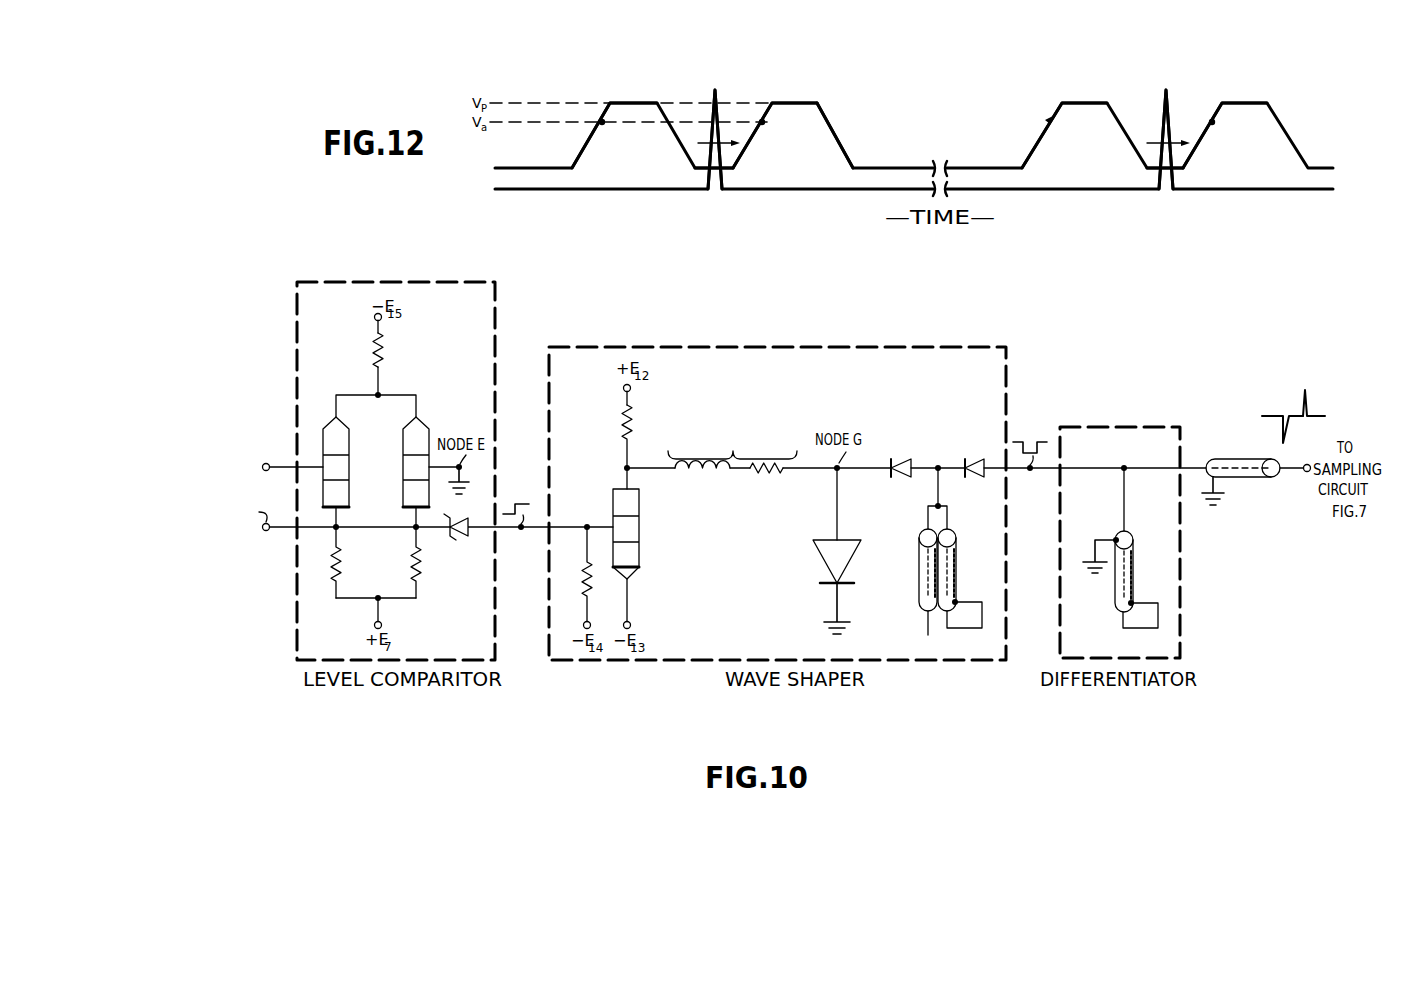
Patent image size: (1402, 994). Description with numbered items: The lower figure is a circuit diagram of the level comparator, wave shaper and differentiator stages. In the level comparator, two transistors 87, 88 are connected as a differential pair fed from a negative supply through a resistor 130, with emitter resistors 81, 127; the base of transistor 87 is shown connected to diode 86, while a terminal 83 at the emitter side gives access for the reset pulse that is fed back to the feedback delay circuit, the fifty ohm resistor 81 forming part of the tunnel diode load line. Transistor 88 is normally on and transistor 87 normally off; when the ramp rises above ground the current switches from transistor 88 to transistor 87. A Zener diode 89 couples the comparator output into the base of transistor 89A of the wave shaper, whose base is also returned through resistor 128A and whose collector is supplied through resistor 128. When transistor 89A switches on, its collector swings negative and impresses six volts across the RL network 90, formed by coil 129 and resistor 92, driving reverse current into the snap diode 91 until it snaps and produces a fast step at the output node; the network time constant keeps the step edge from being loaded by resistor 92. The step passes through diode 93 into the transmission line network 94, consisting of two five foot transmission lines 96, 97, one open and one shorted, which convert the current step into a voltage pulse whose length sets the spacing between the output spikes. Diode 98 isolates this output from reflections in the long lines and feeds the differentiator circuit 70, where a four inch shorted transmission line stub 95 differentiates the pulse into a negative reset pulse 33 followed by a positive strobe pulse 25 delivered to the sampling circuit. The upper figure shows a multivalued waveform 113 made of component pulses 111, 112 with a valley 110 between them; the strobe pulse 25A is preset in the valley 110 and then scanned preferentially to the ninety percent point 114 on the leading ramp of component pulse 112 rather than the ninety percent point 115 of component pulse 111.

In FIG. 12, the component pulse 111 is at (613, 103).
In FIG. 12, the component pulse 112 is at (775, 103).
In FIG. 12, the multivalued waveform 113 is at (843, 137).
In FIG. 12, the 90% point 114 is at (765, 124).
In FIG. 12, the 90% point 115 is at (604, 126).
In FIG. 12, the valley 110 is at (703, 171).
In FIG. 12, the strobe pulse 25A is at (716, 103).
In FIG. 10, the resistor 130 is at (384, 347).
In FIG. 10, the transistor 87 is at (349, 470).
In FIG. 10, the transistor 88 is at (403, 470).
In FIG. 10, the diode 86 is at (247, 467).
In FIG. 10, the terminal 83 is at (250, 537).
In FIG. 10, the resistor 81 is at (333, 560).
In FIG. 10, the resistor 127 is at (421, 568).
In FIG. 10, the Zener diode 89 is at (461, 539).
In FIG. 10, the resistor 128 is at (620, 423).
In FIG. 10, the resistor 128A is at (581, 578).
In FIG. 10, the transistor 89A is at (641, 532).
In FIG. 10, the coil 129 is at (716, 471).
In FIG. 10, the resistor 92 is at (763, 473).
In FIG. 10, the RL network 90 is at (732, 442).
In FIG. 10, the snap diode 91 is at (820, 563).
In FIG. 10, the diode 93 is at (900, 459).
In FIG. 10, the diode 98 is at (972, 459).
In FIG. 10, the transmission line 96 is at (917, 562).
In FIG. 10, the transmission line 97 is at (958, 574).
In FIG. 10, the transmission line network 94 is at (935, 582).
In FIG. 10, the shorted transmission line stub 95 is at (1108, 584).
In FIG. 10, the differentiator circuit 70 is at (1150, 579).
In FIG. 10, the reset pulse 33 is at (1283, 428).
In FIG. 10, the strobe pulse 25 is at (1310, 403).